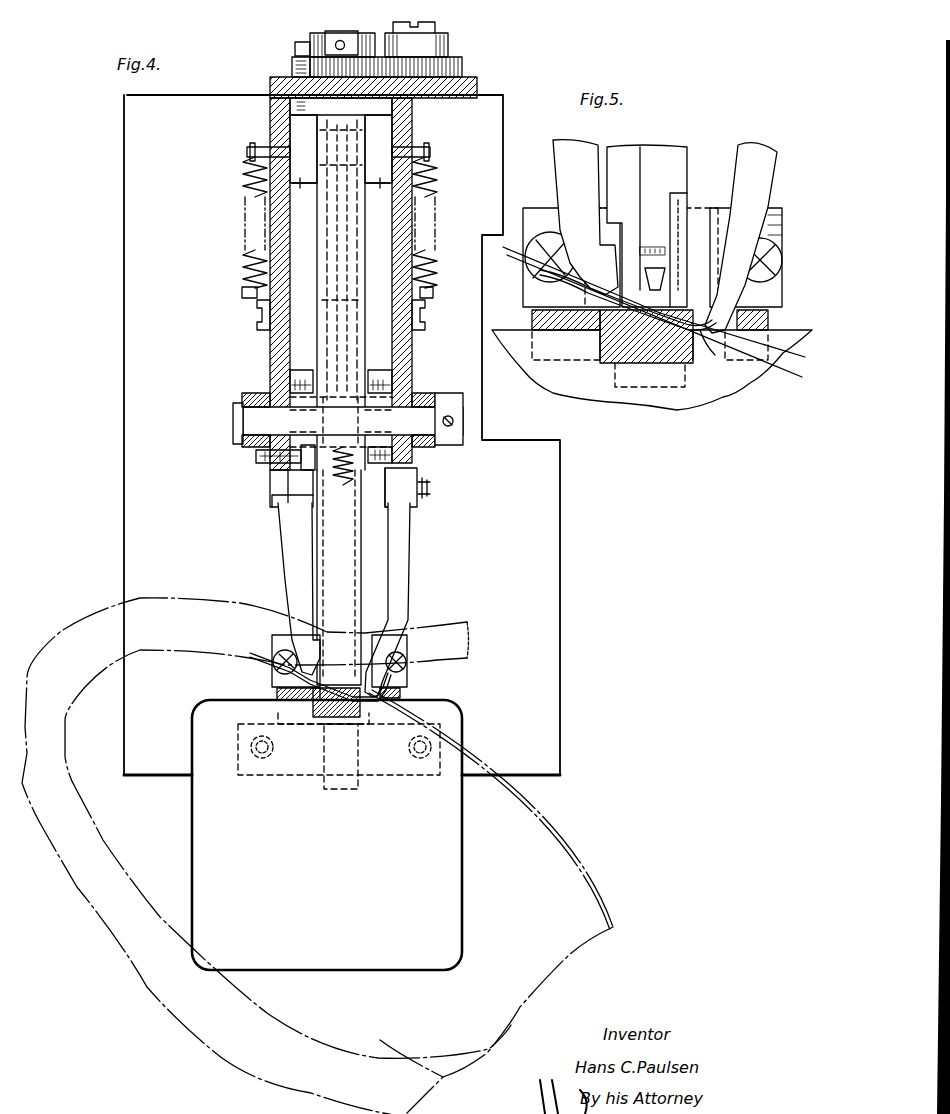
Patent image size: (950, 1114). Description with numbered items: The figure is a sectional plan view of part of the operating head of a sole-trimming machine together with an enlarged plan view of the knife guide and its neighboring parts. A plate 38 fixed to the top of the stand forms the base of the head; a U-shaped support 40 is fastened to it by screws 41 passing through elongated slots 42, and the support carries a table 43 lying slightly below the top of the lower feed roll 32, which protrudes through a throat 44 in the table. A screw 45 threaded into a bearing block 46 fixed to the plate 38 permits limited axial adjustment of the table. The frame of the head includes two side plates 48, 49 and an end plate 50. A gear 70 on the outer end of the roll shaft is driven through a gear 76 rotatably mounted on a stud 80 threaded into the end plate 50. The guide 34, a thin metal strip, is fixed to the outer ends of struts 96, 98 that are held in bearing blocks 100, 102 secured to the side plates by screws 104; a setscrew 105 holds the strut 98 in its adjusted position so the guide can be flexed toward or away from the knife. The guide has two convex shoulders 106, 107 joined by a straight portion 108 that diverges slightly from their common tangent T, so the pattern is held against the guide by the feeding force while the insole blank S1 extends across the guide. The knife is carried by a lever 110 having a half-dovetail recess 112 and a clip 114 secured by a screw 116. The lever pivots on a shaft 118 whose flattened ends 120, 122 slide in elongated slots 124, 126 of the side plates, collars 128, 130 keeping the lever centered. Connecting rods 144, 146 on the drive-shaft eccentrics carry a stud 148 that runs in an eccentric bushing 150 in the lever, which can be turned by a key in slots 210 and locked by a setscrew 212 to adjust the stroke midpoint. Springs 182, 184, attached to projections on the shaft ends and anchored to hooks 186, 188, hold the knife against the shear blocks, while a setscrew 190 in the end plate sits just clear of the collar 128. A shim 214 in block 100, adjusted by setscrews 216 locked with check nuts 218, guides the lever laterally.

In FIG. 4, the lower feed roll 32 is at (277, 693).
In FIG. 5, the lower feed roll 32 is at (627, 347).
In FIG. 5, the guide 34 is at (740, 253).
In FIG. 4, the plate 38 is at (551, 731).
In FIG. 4, the U-shaped support 40 is at (440, 760).
In FIG. 4, the screws 41 is at (255, 760).
In FIG. 4, the elongated slots 42 is at (266, 760).
In FIG. 5, the elongated slots 42 is at (677, 403).
In FIG. 4, the table 43 is at (452, 872).
In FIG. 4, the throat 44 is at (356, 720).
In FIG. 5, the throat 44 is at (630, 370).
In FIG. 4, the screw 45 is at (332, 790).
In FIG. 4, the bearing block 46 is at (288, 640).
In FIG. 4, the side plate 48 is at (270, 352).
In FIG. 4, the side plate 49 is at (412, 353).
In FIG. 4, the end plate 50 is at (467, 88).
In FIG. 4, the gear 70 is at (313, 33).
In FIG. 4, the gear 76 is at (462, 58).
In FIG. 4, the stud 80 is at (435, 28).
In FIG. 4, the strut 96 is at (283, 555).
In FIG. 5, the strut 96 is at (583, 152).
In FIG. 4, the strut 98 is at (405, 587).
In FIG. 5, the strut 98 is at (743, 160).
In FIG. 4, the bearing block 100 is at (280, 478).
In FIG. 4, the bearing block 102 is at (377, 490).
In FIG. 4, the screws 104 is at (273, 382).
In FIG. 4, the setscrew 105 is at (433, 493).
In FIG. 5, the convex shoulder 106 is at (617, 325).
In FIG. 5, the convex shoulder 107 is at (733, 350).
In FIG. 5, the straight portion 108 is at (685, 367).
In FIG. 4, the lever 110 is at (347, 545).
In FIG. 5, the lever 110 is at (657, 157).
In FIG. 5, the half-dovetail recess 112 is at (653, 247).
In FIG. 5, the clip 114 is at (680, 195).
In FIG. 5, the screw 116 is at (685, 208).
In FIG. 4, the shaft 118 is at (353, 212).
In FIG. 4, the reduced flattened end 120 is at (282, 153).
In FIG. 4, the reduced flattened end 122 is at (402, 150).
In FIG. 4, the elongated slot 124 is at (273, 133).
In FIG. 4, the elongated slot 126 is at (403, 128).
In FIG. 4, the collar 128 is at (308, 199).
In FIG. 4, the collar 130 is at (381, 199).
In FIG. 4, the connecting rod 144 is at (250, 443).
In FIG. 4, the connecting rod 146 is at (430, 447).
In FIG. 4, the stud 148 is at (235, 418).
In FIG. 4, the eccentric bushing 150 is at (345, 392).
In FIG. 4, the spring 182 is at (243, 182).
In FIG. 4, the spring 184 is at (433, 192).
In FIG. 4, the hook 186 is at (242, 292).
In FIG. 4, the hook 188 is at (430, 297).
In FIG. 4, the setscrew 190 is at (296, 44).
In FIG. 4, the slots 210 is at (341, 422).
In FIG. 4, the setscrew 212 is at (348, 484).
In FIG. 4, the shim 214 is at (300, 526).
In FIG. 4, the setscrews 216 is at (255, 458).
In FIG. 4, the check nuts 218 is at (280, 480).
In FIG. 4, the insole blank S1 is at (190, 608).
In FIG. 5, the common tangent T is at (793, 373).